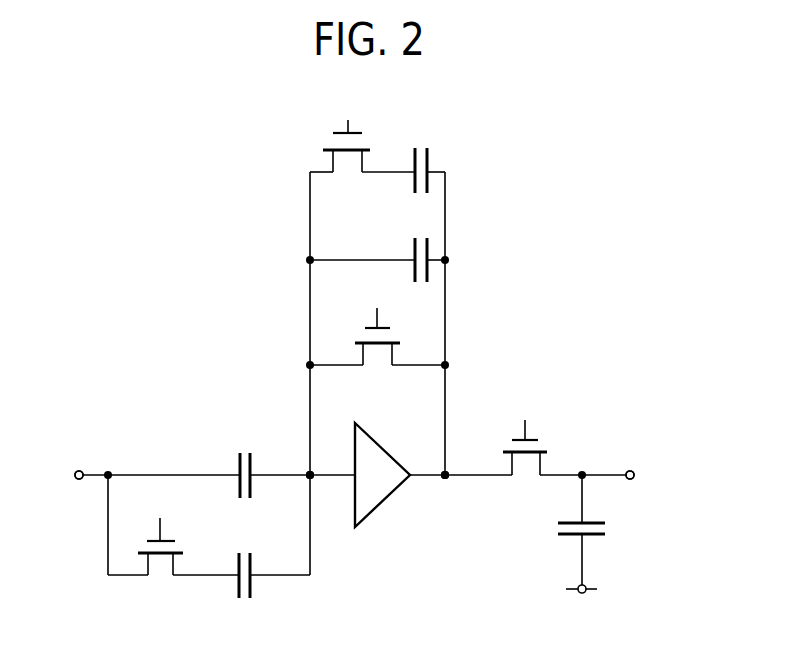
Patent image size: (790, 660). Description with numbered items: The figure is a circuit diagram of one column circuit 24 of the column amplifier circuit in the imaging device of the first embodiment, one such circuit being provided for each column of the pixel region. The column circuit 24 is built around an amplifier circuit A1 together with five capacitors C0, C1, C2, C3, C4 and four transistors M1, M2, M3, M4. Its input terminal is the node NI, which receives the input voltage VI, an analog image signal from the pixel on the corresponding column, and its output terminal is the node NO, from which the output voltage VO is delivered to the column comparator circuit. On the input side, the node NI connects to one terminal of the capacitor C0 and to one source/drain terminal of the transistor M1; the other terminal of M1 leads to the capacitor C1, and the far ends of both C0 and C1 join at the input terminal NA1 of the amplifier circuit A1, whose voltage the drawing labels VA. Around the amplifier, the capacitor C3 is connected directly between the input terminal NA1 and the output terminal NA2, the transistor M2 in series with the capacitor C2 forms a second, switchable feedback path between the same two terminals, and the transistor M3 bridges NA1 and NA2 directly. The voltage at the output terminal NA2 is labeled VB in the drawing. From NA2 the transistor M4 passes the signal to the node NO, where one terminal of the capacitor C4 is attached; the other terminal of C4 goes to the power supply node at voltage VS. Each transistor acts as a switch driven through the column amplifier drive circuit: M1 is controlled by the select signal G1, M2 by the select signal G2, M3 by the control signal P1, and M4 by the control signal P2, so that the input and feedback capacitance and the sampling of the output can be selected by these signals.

The column circuit 24 is at (574, 183).
The input voltage VI is at (79, 460).
The input node NI is at (79, 480).
The capacitor C0 is at (244, 461).
The capacitor C1 is at (244, 561).
The capacitor C2 is at (420, 158).
The capacitor C3 is at (420, 247).
The capacitor C4 is at (596, 525).
The transistor M1 is at (160, 575).
The transistor M2 is at (345, 166).
The transistor M3 is at (377, 368).
The transistor M4 is at (523, 478).
The select signal G1 is at (160, 514).
The select signal G2 is at (347, 110).
The control signal P1 is at (377, 303).
The control signal P2 is at (525, 416).
The amplifier circuit A1 is at (382, 475).
The node voltage VA is at (323, 487).
The node voltage VB is at (444, 487).
The input terminal NA1 is at (310, 475).
The output terminal NA2 is at (445, 475).
The output voltage VO is at (628, 462).
The output node NO is at (634, 478).
The voltage VS is at (558, 590).